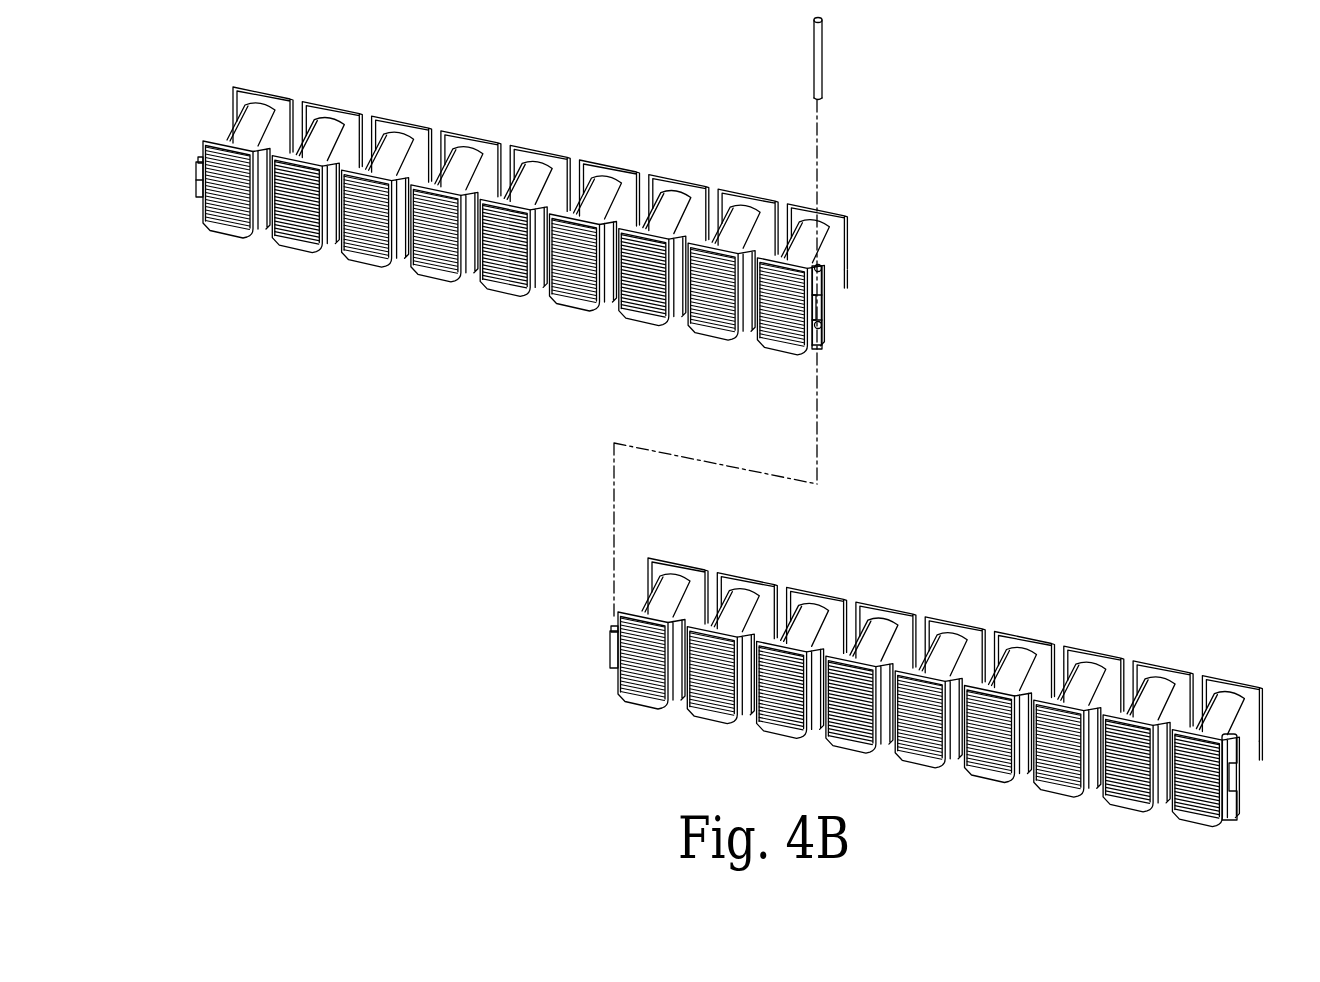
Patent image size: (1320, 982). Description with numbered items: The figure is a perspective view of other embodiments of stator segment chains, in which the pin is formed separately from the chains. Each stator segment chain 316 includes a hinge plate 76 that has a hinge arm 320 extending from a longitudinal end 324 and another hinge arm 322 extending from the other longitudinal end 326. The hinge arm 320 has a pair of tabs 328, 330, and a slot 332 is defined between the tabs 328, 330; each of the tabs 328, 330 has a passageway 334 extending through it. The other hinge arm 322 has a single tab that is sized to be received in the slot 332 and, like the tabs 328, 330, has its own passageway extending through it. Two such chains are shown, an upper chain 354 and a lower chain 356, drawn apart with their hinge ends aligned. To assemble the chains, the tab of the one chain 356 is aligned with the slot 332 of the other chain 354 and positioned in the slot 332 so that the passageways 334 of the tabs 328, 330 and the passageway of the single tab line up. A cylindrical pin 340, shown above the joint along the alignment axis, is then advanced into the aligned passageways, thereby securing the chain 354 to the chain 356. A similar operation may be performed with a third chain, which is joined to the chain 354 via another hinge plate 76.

The hinge plate 76 is at (884, 313).
The stator segment chain 316 is at (695, 422).
The hinge arm 320 is at (859, 301).
The hinge arm 322 is at (165, 169).
The longitudinal end 324 is at (824, 350).
The longitudinal end 326 is at (205, 147).
The tab 328 is at (823, 292).
The tab 330 is at (823, 338).
The slot 332 is at (880, 301).
The passageway 334 is at (822, 266).
The cylindrical pin 340 is at (823, 42).
The chain 354 is at (538, 242).
The chain 356 is at (903, 670).